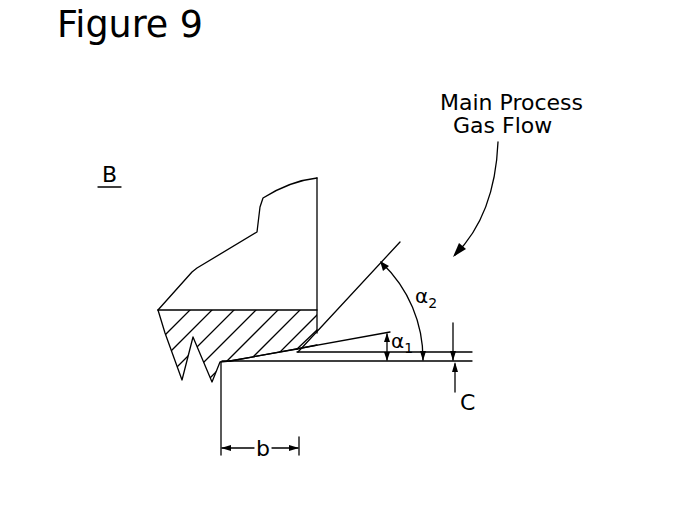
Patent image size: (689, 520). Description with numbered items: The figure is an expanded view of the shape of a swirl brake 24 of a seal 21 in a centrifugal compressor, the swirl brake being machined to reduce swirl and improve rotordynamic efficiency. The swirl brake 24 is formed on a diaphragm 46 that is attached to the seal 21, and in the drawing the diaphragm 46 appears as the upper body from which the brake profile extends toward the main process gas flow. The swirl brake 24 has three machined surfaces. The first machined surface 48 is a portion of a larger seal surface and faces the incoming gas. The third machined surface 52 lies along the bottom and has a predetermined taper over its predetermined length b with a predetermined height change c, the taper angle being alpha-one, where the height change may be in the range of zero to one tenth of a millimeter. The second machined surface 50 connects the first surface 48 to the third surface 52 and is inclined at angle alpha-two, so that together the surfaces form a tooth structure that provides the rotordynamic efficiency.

The seal 21 is at (183, 321).
The swirl brake 24 is at (312, 330).
The diaphragm 46 is at (297, 212).
The first machined surface 48 is at (318, 333).
The second machined surface 50 is at (313, 338).
The third machined surface 52 is at (259, 362).